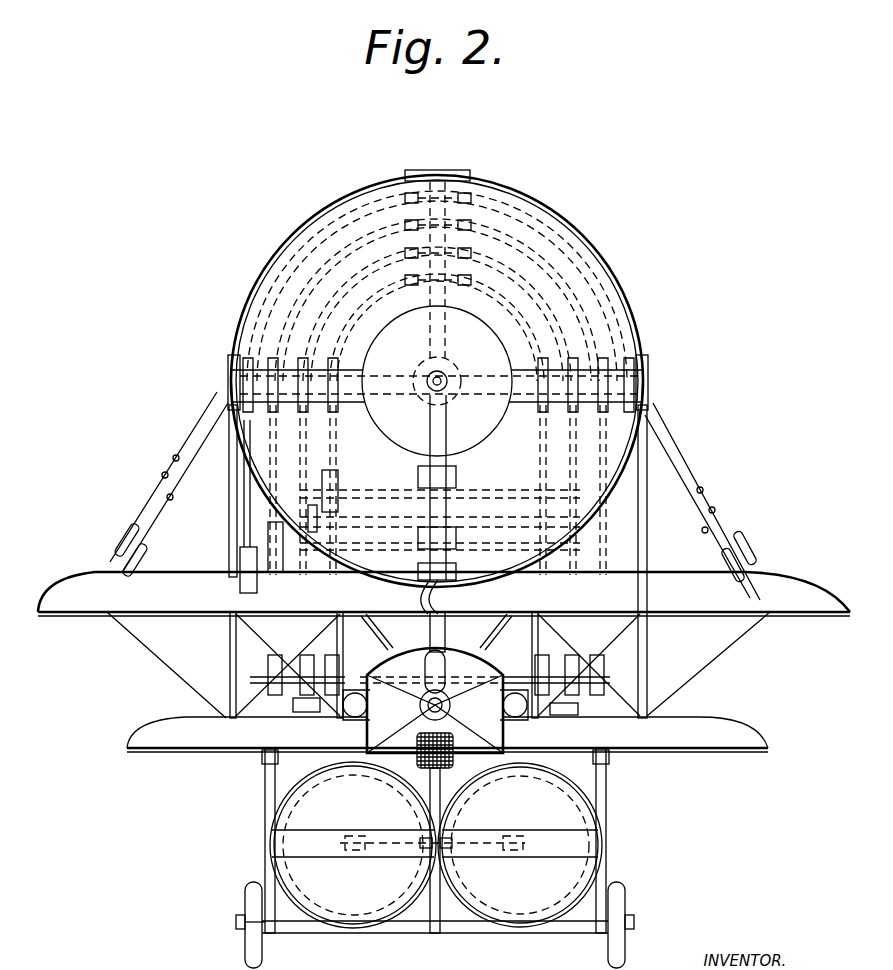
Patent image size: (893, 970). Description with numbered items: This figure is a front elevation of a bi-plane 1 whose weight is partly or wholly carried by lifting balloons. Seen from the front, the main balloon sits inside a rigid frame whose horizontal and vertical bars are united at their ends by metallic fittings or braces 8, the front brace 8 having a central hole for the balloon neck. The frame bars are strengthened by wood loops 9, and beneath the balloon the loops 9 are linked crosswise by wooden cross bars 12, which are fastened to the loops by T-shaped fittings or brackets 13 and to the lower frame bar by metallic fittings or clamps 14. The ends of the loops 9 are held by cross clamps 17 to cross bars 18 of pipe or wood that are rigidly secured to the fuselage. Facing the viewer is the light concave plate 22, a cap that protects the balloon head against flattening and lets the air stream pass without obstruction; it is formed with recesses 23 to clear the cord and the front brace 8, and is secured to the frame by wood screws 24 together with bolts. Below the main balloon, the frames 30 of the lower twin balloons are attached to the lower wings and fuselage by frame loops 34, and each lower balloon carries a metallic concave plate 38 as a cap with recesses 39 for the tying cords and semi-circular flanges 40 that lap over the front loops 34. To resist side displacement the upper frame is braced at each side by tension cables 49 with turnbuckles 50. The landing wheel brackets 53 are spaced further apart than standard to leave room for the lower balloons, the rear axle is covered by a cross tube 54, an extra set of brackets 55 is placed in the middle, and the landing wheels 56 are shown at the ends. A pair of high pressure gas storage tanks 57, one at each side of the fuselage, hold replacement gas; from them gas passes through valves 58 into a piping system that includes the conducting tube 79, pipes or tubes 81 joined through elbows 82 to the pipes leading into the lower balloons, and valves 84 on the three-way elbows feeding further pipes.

The bi-plane 1 is at (435, 666).
The metallic fittings or braces 8 is at (452, 374).
The wood loops 9 is at (548, 432).
The wooden cross bars 12 is at (415, 490).
The T-shaped fittings or brackets 13 is at (229, 528).
The metallic fittings or clamps 14 is at (425, 490).
The cross clamps 17 is at (268, 672).
The cross bars 18 is at (535, 672).
The concave plate 22 is at (622, 304).
The recesses 23 is at (368, 405).
The wood screws 24 is at (442, 172).
The frames 30 is at (418, 572).
The frame loops 34 is at (265, 778).
The metallic concave plates 38 is at (434, 845).
The recesses 39 is at (330, 838).
The semi-circular flanges 40 is at (262, 894).
The tension cables 49 is at (182, 470).
The turnbuckles 50 is at (120, 536).
The landing wheel brackets 53 is at (600, 862).
The cross tube 54 is at (470, 934).
The extra set of brackets 55 is at (435, 934).
The landing wheels 56 is at (245, 948).
The high pressure gas storage tanks 57 is at (369, 705).
The valves 58 is at (293, 705).
The conducting tube 79 is at (452, 766).
The pipes or tubes 81 is at (420, 850).
The elbows 82 is at (345, 851).
The valves 84 is at (470, 838).